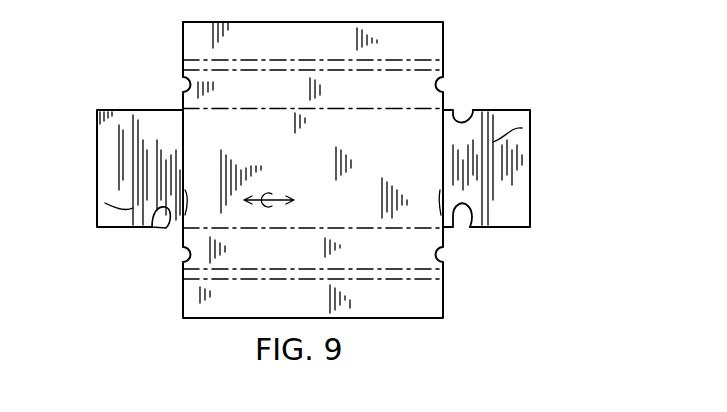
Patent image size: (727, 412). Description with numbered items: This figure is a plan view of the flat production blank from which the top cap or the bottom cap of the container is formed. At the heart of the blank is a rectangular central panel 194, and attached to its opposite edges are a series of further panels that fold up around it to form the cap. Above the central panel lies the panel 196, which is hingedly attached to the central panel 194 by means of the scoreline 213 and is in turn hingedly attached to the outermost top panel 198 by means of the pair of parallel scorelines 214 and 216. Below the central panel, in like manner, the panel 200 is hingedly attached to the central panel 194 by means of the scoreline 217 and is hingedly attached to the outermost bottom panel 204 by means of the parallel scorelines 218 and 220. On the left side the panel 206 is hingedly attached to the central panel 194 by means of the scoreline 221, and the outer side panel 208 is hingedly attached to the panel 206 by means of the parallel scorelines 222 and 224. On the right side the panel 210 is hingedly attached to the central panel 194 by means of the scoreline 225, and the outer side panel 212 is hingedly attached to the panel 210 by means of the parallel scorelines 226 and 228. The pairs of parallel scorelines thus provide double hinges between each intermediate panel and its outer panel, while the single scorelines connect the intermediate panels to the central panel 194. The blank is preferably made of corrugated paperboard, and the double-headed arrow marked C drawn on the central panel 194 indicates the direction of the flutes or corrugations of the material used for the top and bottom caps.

The central panel 194 is at (325, 181).
The panel 196 is at (290, 102).
The panel 198 is at (327, 51).
The panel 200 is at (297, 262).
The panel 204 is at (297, 308).
The panel 206 is at (163, 137).
The panel 208 is at (117, 150).
The panel 210 is at (453, 210).
The panel 212 is at (512, 193).
The scoreline 213 is at (421, 112).
The scoreline 214 is at (424, 72).
The scoreline 216 is at (408, 57).
The scoreline 217 is at (285, 228).
The scoreline 218 is at (347, 270).
The scoreline 220 is at (347, 279).
The scoreline 221 is at (185, 190).
The scoreline 222 is at (165, 228).
The scoreline 224 is at (105, 203).
The scoreline 225 is at (442, 190).
The scoreline 226 is at (458, 112).
The scoreline 228 is at (522, 128).